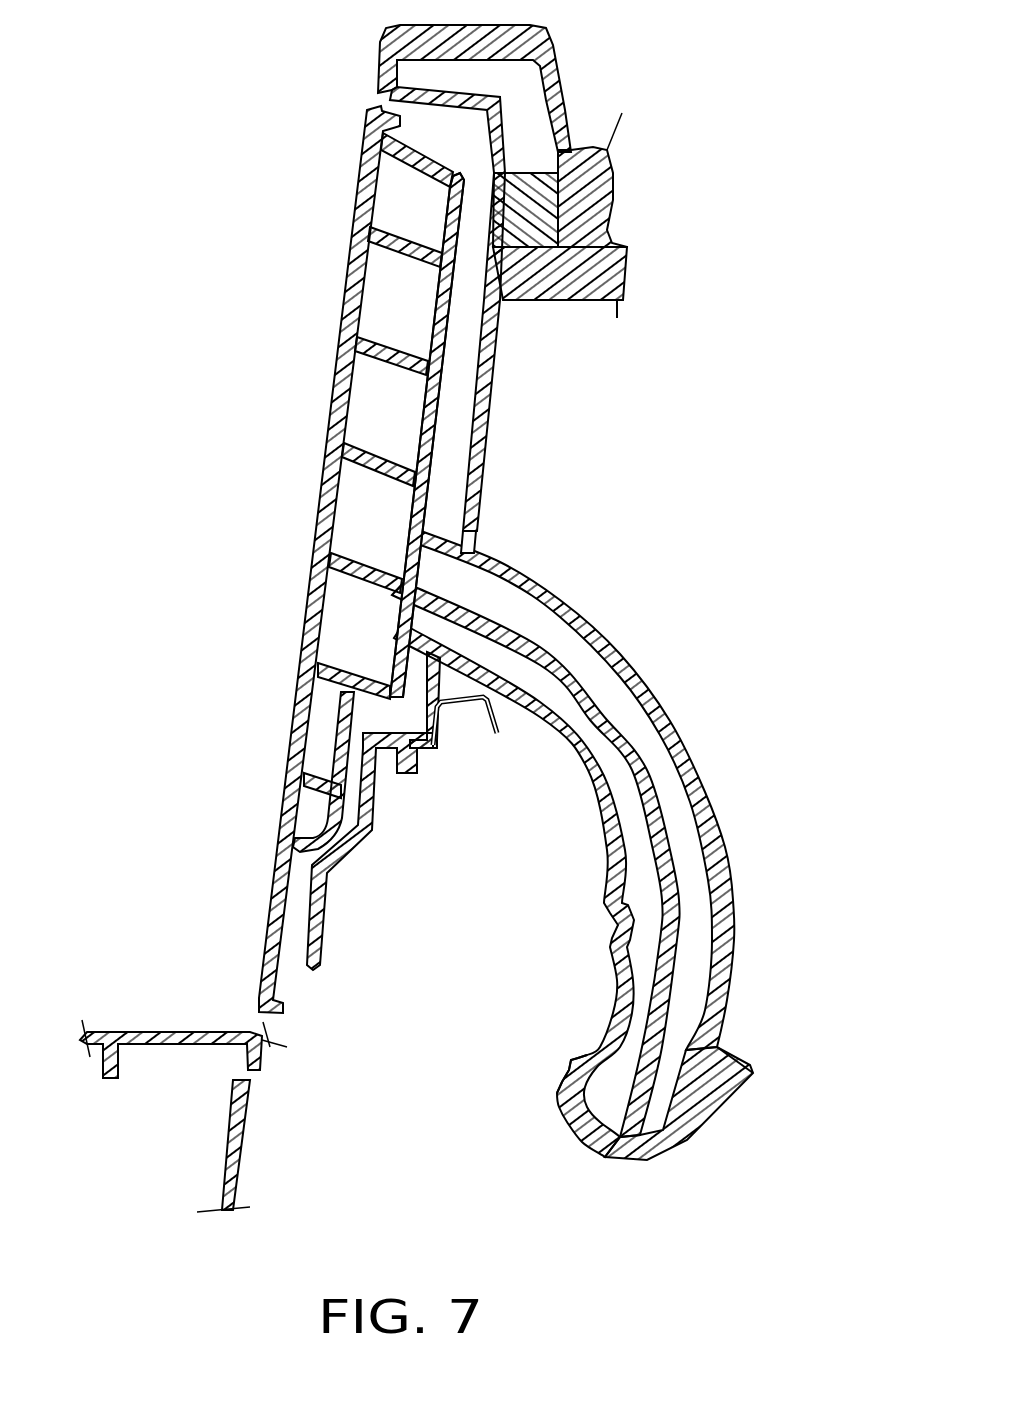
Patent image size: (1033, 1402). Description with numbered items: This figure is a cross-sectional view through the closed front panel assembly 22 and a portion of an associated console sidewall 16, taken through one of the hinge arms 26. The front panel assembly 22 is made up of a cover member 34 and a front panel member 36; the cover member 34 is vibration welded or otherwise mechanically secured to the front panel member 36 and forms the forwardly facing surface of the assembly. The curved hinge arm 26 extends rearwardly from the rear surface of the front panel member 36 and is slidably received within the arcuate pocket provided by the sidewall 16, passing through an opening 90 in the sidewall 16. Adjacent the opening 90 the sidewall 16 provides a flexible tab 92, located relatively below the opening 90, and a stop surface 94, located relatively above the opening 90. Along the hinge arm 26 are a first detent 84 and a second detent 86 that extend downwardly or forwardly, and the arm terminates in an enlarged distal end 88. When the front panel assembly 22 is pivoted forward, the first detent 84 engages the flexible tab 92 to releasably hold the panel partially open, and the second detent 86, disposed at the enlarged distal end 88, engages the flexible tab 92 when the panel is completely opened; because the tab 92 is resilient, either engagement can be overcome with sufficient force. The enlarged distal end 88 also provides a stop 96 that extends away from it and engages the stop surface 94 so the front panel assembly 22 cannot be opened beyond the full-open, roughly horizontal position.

The front panel assembly 22 is at (366, 519).
The sidewall 16 is at (503, 372).
The front panel member 36 is at (433, 437).
The stop surface 94 is at (470, 533).
The opening 90 is at (467, 552).
The hinge arm 26 is at (640, 692).
The flexible tab 92 is at (488, 720).
The cover member 34 is at (268, 907).
The first detent 84 is at (605, 928).
The second detent 86 is at (560, 1072).
The stop 96 is at (747, 1070).
The enlarged distal end 88 is at (640, 1158).